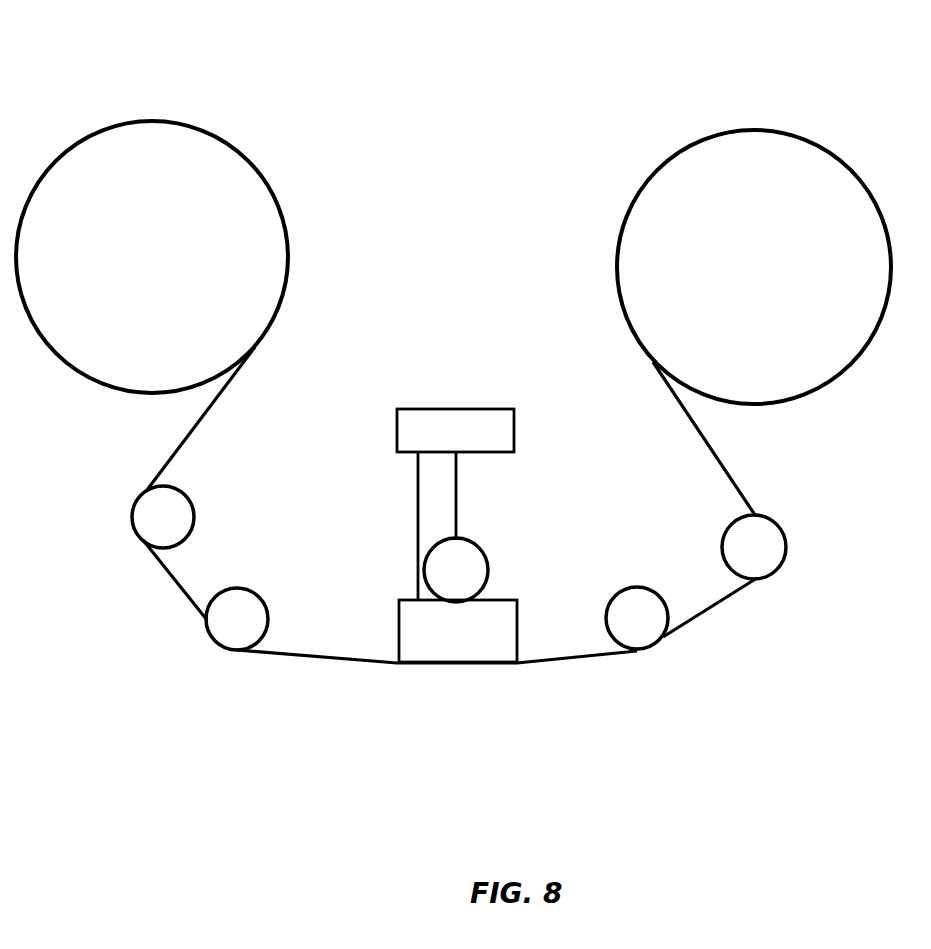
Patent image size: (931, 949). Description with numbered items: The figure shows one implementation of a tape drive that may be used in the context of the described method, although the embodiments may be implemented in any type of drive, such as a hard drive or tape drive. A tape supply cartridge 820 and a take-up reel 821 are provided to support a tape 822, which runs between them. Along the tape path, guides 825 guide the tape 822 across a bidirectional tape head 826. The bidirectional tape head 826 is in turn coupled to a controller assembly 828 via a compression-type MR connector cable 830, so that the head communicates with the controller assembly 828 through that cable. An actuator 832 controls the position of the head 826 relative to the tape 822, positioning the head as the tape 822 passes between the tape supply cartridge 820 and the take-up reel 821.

The tape supply cartridge 820 is at (150, 121).
The take-up reel 821 is at (752, 130).
The tape 822 is at (325, 658).
The guides 825 is at (195, 510).
The bidirectional tape head 826 is at (520, 628).
The controller assembly 828 is at (454, 409).
The compression-type MR connector cable 830 is at (418, 568).
The actuator 832 is at (480, 543).